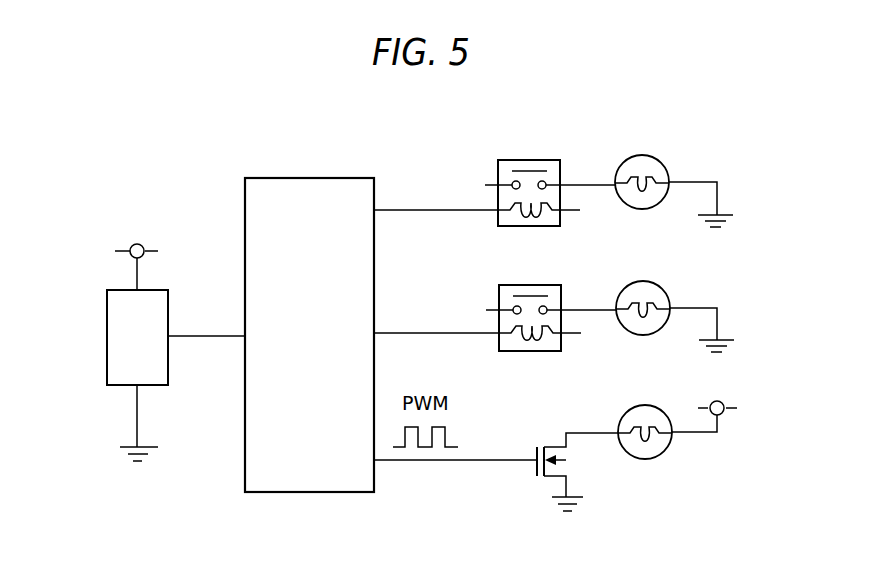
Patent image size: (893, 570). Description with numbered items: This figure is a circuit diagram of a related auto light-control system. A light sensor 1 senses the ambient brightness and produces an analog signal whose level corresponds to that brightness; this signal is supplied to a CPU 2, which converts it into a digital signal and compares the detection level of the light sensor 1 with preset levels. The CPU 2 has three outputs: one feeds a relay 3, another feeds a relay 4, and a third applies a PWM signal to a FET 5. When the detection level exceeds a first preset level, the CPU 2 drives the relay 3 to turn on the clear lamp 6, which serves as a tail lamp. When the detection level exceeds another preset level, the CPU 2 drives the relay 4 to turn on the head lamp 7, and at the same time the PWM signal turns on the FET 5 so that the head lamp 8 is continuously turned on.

The light sensor 1 is at (107, 338).
The CPU 2 is at (307, 178).
The relay 3 is at (530, 160).
The relay 4 is at (531, 285).
The FET 5 is at (540, 485).
The clear lamp 6 is at (643, 155).
The head lamp 7 is at (644, 281).
The head lamp 8 is at (644, 405).